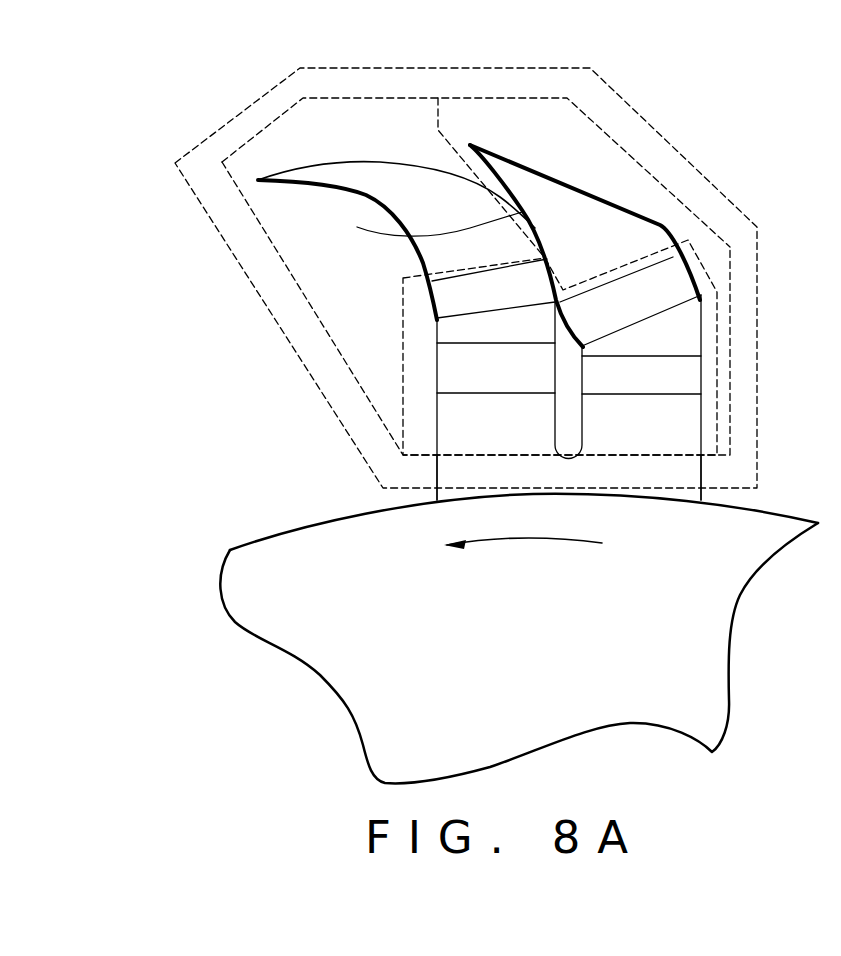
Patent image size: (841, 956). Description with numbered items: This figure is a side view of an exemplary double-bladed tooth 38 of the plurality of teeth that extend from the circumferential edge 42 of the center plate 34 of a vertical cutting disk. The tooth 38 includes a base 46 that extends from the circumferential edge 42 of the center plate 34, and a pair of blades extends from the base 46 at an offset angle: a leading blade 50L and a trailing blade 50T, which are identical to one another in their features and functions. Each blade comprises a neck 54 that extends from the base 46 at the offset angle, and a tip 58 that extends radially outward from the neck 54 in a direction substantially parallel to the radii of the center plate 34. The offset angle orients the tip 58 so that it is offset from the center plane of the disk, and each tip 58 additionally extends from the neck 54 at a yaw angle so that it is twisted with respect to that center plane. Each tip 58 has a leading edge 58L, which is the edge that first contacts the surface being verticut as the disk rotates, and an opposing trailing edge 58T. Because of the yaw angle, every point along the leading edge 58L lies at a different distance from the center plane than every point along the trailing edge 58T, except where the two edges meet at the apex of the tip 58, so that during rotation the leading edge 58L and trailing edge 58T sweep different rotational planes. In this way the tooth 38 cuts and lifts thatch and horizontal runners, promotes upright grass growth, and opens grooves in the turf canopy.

The center plate 34 is at (568, 658).
The tooth 38 is at (638, 113).
The circumferential edge 42 is at (325, 510).
The base 46 is at (677, 477).
The trailing blade 50T is at (667, 187).
The leading blade 50L is at (300, 288).
The neck 54 is at (720, 315).
The tip 58 is at (479, 185).
The trailing edge 58T is at (423, 163).
The leading edge 58L is at (387, 207).